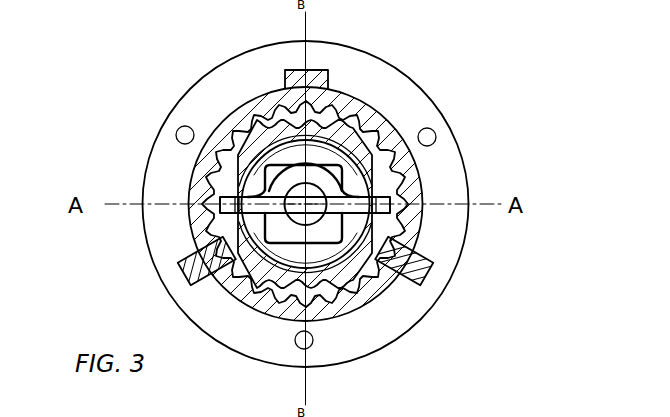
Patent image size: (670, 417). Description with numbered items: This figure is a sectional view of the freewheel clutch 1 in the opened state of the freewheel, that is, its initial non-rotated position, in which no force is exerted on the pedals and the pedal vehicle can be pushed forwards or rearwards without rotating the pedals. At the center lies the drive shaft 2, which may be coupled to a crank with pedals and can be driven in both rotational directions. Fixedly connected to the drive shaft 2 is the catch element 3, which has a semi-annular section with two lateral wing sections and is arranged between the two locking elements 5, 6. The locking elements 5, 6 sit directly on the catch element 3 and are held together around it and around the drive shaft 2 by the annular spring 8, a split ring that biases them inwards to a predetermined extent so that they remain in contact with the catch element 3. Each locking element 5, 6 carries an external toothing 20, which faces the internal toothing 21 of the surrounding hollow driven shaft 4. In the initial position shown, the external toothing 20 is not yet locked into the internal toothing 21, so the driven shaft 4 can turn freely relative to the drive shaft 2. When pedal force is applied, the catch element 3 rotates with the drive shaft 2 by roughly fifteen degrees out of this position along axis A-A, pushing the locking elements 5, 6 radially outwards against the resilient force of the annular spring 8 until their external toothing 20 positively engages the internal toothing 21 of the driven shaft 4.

The freewheel clutch 1 is at (330, 248).
The drive shaft 2 is at (360, 223).
The catch element 3 is at (333, 185).
The driven shaft 4 is at (387, 82).
The locking element 5 is at (348, 135).
The locking element 6 is at (345, 255).
The annular spring 8 is at (340, 268).
The external toothing 20 is at (248, 109).
The internal toothing 21 is at (287, 102).